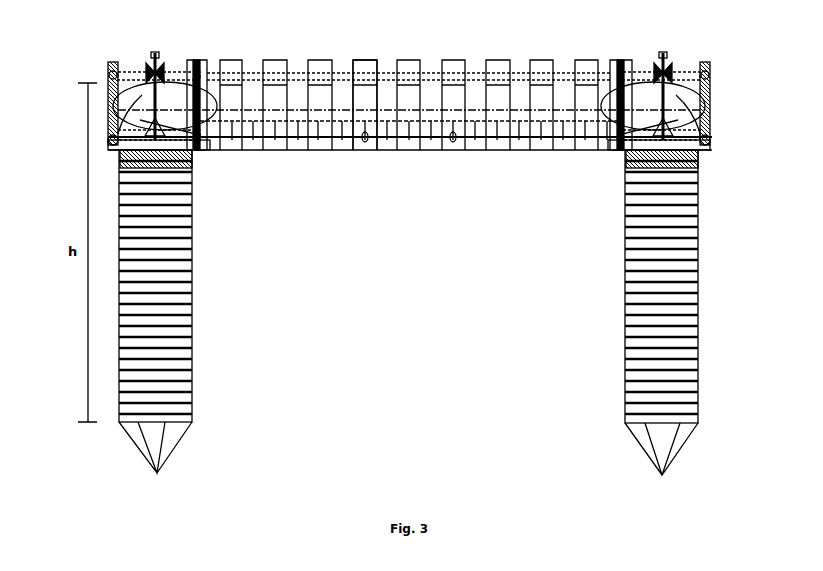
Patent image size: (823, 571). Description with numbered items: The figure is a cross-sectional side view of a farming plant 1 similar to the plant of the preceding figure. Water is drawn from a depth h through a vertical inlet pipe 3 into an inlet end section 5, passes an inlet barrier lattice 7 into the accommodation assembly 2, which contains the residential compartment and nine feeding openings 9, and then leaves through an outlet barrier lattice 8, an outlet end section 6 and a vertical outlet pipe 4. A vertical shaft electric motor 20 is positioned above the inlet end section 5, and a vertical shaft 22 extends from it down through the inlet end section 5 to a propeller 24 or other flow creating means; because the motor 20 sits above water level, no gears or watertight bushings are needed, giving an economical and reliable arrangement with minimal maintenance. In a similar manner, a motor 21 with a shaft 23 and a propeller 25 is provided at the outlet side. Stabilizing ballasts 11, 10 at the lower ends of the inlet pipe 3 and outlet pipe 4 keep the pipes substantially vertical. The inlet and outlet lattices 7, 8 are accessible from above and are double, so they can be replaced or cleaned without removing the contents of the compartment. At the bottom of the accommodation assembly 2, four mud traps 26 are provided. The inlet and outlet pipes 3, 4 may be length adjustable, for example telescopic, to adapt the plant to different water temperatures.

The farming plant 1 is at (382, 258).
The accommodation assembly 2 is at (430, 103).
The inlet pipe 3 is at (187, 313).
The outlet pipe 4 is at (627, 296).
The inlet end section 5 is at (132, 78).
The outlet end section 6 is at (663, 103).
The inlet barrier lattice 7 is at (197, 97).
The outlet barrier lattice 8 is at (618, 98).
The feeding openings 9 is at (366, 70).
The stabilizing ballast 10 is at (662, 475).
The stabilizing ballast 11 is at (157, 473).
The vertical shaft electric motor 20 is at (158, 53).
The motor 21 is at (662, 55).
The vertical shaft 22 is at (157, 112).
The shaft 23 is at (692, 92).
The propeller 24 is at (175, 150).
The propeller 25 is at (695, 137).
The mud traps 26 is at (452, 151).